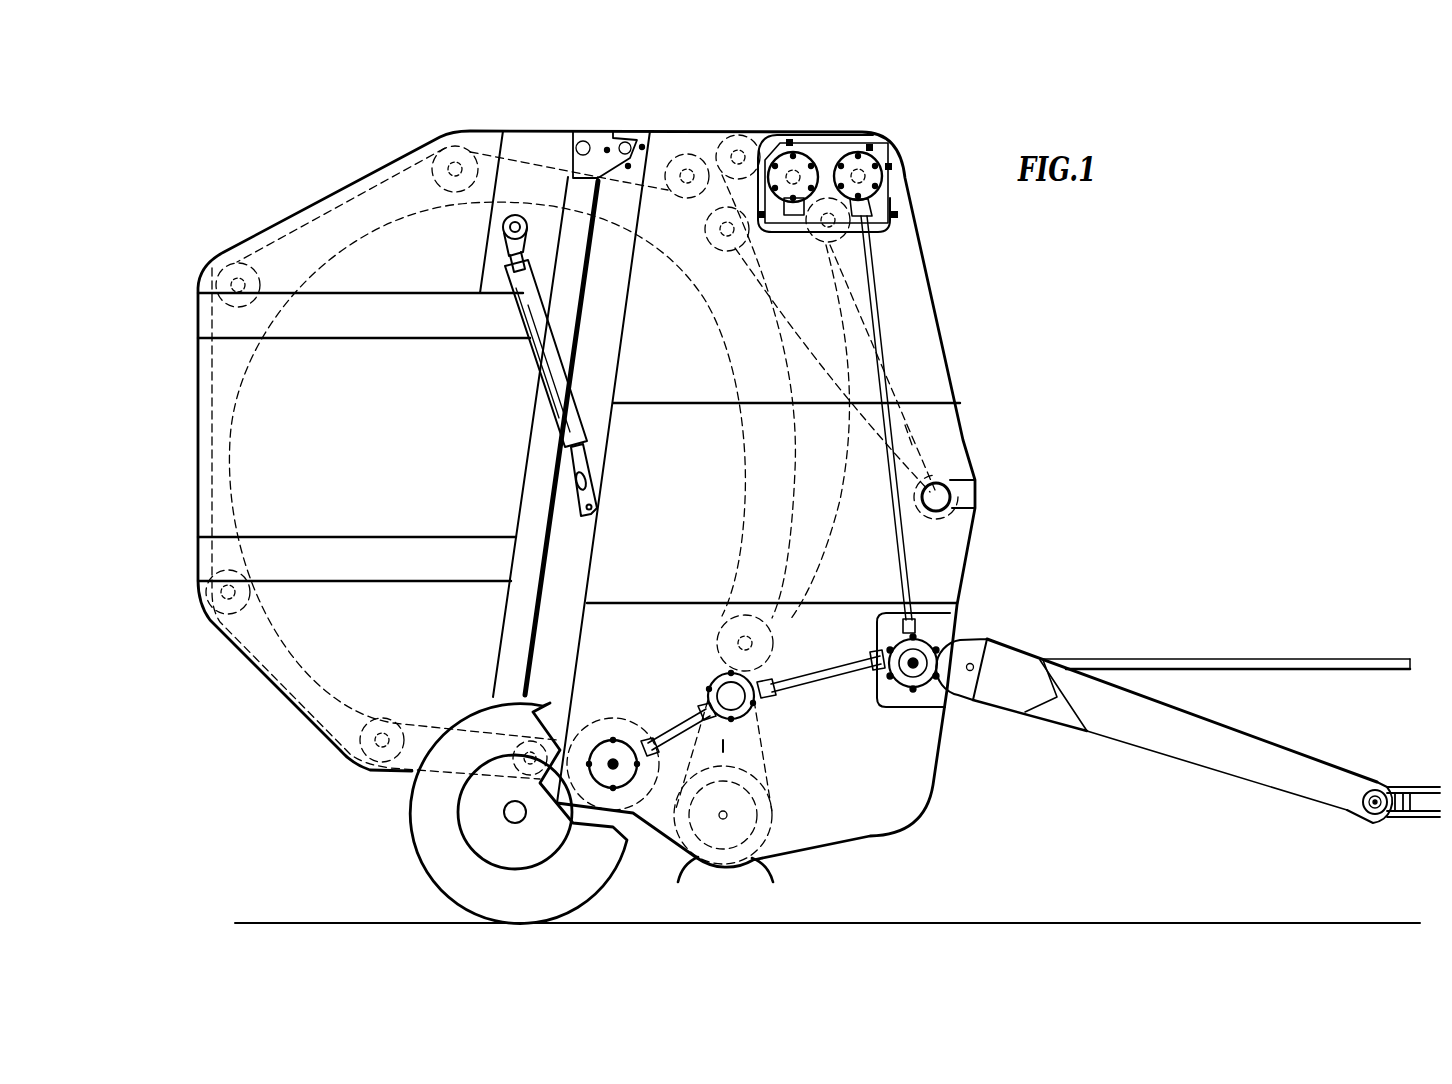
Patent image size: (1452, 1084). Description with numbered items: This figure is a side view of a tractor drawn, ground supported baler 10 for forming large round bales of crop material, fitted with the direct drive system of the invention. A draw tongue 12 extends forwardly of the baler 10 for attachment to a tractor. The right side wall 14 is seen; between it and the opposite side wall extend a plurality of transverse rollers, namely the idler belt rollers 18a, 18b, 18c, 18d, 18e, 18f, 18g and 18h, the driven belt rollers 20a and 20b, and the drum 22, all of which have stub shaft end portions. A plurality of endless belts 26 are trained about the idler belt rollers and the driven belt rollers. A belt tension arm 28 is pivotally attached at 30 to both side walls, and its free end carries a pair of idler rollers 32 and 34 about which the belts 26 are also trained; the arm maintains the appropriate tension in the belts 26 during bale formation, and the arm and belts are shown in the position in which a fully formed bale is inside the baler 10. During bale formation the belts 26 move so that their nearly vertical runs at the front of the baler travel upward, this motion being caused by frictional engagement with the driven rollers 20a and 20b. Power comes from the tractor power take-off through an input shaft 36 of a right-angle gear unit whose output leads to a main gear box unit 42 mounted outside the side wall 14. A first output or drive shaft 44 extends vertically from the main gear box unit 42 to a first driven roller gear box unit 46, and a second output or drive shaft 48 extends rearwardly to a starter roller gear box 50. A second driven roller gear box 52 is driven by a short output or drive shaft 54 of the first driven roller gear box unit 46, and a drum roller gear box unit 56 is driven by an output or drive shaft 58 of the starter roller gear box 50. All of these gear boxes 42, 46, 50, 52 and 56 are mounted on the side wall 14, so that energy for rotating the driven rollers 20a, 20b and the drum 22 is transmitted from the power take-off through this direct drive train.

The baler 10 is at (970, 298).
The draw tongue 12 is at (1155, 750).
The right side wall 14 is at (925, 363).
The idler belt roller 18a is at (500, 725).
The idler belt roller 18b is at (395, 718).
The idler belt roller 18c is at (198, 610).
The idler belt roller 18d is at (236, 262).
The idler belt roller 18e is at (430, 156).
The idler belt roller 18f is at (740, 137).
The idler belt roller 18g is at (816, 250).
The idler belt roller 18h is at (717, 627).
The driven belt roller 20a is at (812, 150).
The driven belt roller 20b is at (895, 134).
The drum 22 is at (633, 808).
The endless belts 26 is at (227, 503).
The belt tension arm 28 is at (900, 430).
The pivot 30 is at (958, 504).
The idler roller 32 is at (690, 152).
The idler roller 34 is at (703, 270).
The input shaft 36 is at (1180, 660).
The main gear box unit 42 is at (950, 656).
The first output or drive shaft 44 is at (908, 560).
The first driven roller gear box unit 46 is at (888, 178).
The second output or drive shaft 48 is at (825, 687).
The starter roller gear box 50 is at (755, 720).
The second driven roller gear box 52 is at (793, 151).
The short output or drive shaft 54 is at (830, 156).
The drum roller gear box unit 56 is at (612, 746).
The output or drive shaft 58 is at (664, 743).